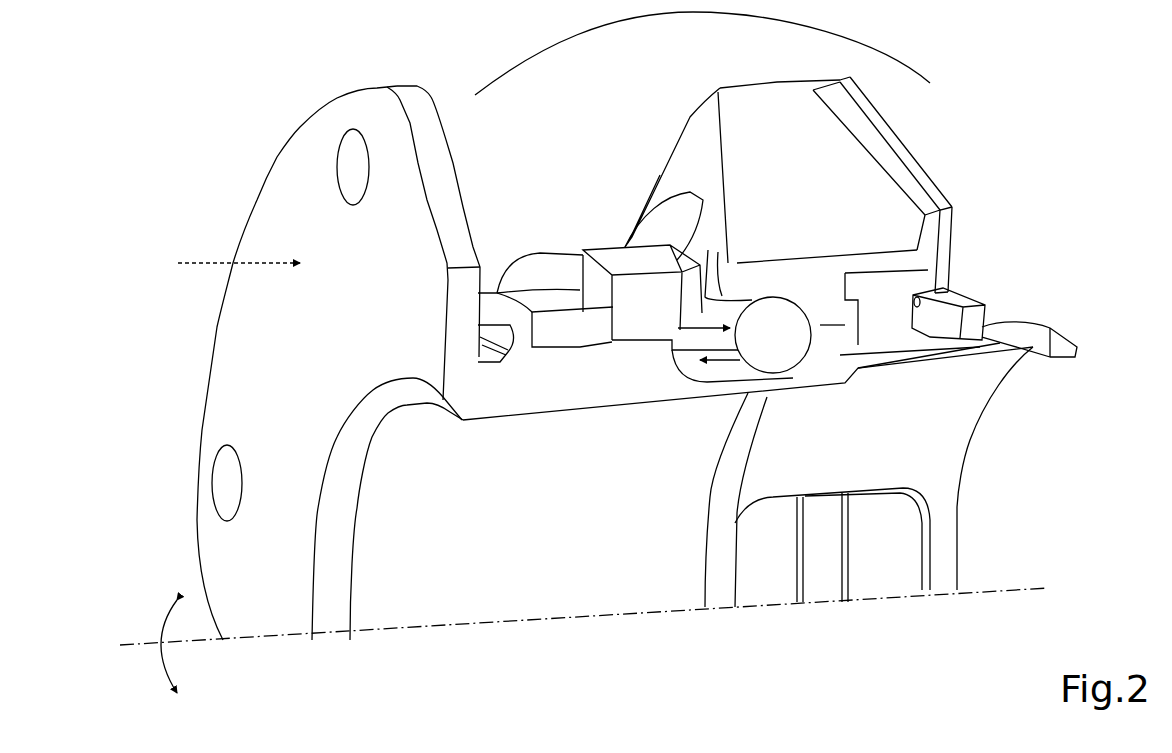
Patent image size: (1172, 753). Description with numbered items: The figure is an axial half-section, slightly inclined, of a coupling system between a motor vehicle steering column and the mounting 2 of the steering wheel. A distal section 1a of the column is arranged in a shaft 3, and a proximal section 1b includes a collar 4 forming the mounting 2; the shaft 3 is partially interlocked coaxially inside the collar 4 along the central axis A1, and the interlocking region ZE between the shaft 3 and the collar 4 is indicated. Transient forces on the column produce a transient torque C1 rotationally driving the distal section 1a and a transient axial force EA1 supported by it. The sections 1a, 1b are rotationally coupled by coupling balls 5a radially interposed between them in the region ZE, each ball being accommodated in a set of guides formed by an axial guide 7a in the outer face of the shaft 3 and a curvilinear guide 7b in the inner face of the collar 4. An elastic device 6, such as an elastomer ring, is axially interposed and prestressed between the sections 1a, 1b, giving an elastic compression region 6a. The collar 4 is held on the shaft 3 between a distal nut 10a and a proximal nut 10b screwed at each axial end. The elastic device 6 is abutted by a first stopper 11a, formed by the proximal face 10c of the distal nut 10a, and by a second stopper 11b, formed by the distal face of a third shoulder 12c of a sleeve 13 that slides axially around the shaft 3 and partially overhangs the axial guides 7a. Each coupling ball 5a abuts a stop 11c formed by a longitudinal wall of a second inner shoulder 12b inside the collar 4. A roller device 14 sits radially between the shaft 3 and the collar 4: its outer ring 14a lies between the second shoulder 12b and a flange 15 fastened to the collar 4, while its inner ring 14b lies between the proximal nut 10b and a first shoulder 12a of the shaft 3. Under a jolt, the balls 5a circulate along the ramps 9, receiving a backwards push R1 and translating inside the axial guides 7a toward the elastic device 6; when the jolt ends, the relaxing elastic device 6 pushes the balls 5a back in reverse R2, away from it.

The distal section 1a is at (185, 413).
The proximal section 1b is at (948, 187).
The mounting 2 is at (777, 82).
The shaft 3 is at (963, 507).
The collar 4 is at (696, 175).
The coupling element 5a is at (773, 335).
The elastic device 6 is at (660, 297).
The elastic compression region 6a is at (598, 233).
The axial guide 7a is at (714, 375).
The curvilinear guide 7b is at (741, 282).
The ramp 9 is at (730, 300).
The distal nut 10a is at (572, 329).
The proximal nut 10b is at (1000, 303).
The proximal face 10c is at (587, 248).
The first stopper 11a is at (598, 332).
The second stopper 11b is at (676, 257).
The stop 11c is at (798, 317).
The first shoulder 12a is at (828, 350).
The second inner shoulder 12b is at (818, 303).
The third shoulder 12c is at (612, 340).
The sleeve 13 is at (700, 345).
The roller device 14 is at (897, 355).
The outer ring 14a is at (885, 278).
The inner ring 14b is at (872, 350).
The flange 15 is at (955, 228).
The interlocking region ZE is at (702, 53).
The transient axial force EA1 is at (220, 263).
The central axis A1 is at (571, 619).
The transient torque C1 is at (153, 646).
The backwards push R1 is at (720, 352).
The reverse push-back R2 is at (704, 320).